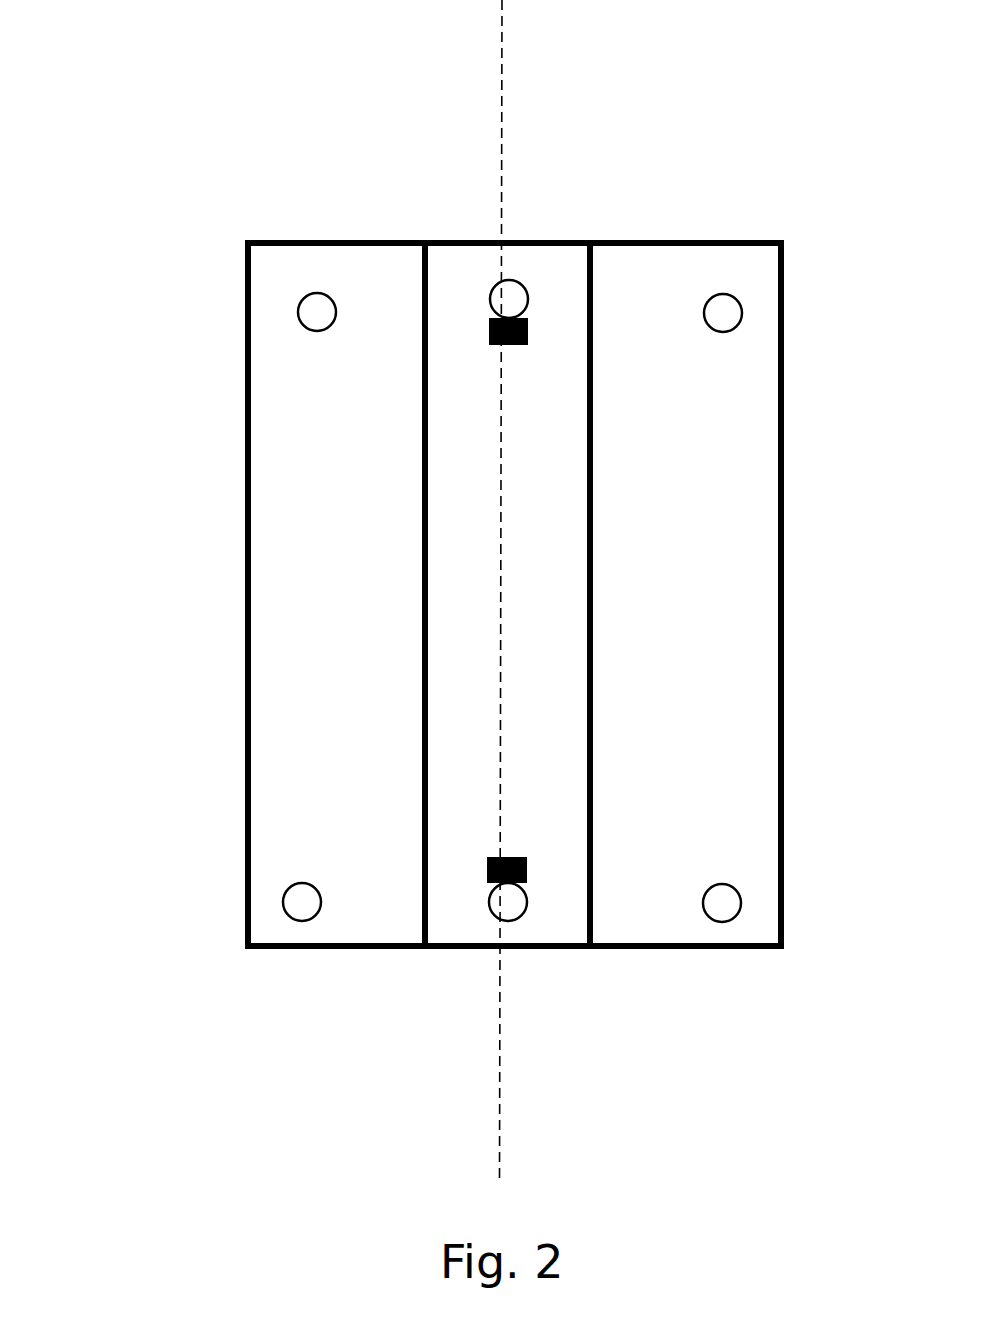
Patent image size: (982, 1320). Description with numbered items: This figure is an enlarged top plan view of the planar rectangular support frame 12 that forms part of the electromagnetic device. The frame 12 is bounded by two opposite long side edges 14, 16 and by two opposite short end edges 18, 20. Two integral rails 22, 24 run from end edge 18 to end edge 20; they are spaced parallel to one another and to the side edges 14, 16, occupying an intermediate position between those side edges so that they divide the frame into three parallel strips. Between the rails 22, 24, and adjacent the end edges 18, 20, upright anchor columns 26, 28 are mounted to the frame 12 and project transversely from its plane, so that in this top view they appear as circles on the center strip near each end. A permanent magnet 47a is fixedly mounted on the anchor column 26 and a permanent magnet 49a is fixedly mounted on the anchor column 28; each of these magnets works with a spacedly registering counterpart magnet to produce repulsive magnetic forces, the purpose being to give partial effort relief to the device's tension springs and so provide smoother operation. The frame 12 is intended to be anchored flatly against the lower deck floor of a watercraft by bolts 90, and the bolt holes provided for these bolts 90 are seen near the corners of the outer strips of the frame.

The support frame 12 is at (358, 674).
The long side edge 14 is at (246, 768).
The long side edge 16 is at (778, 833).
The short end edge 18 is at (292, 948).
The short end edge 20 is at (302, 242).
The rail 22 is at (425, 381).
The rail 24 is at (590, 458).
The upright anchor column 26 is at (488, 907).
The upright anchor column 28 is at (490, 298).
The permanent magnet 47a is at (527, 865).
The permanent magnet 49a is at (528, 340).
The bolt 90 is at (298, 310).